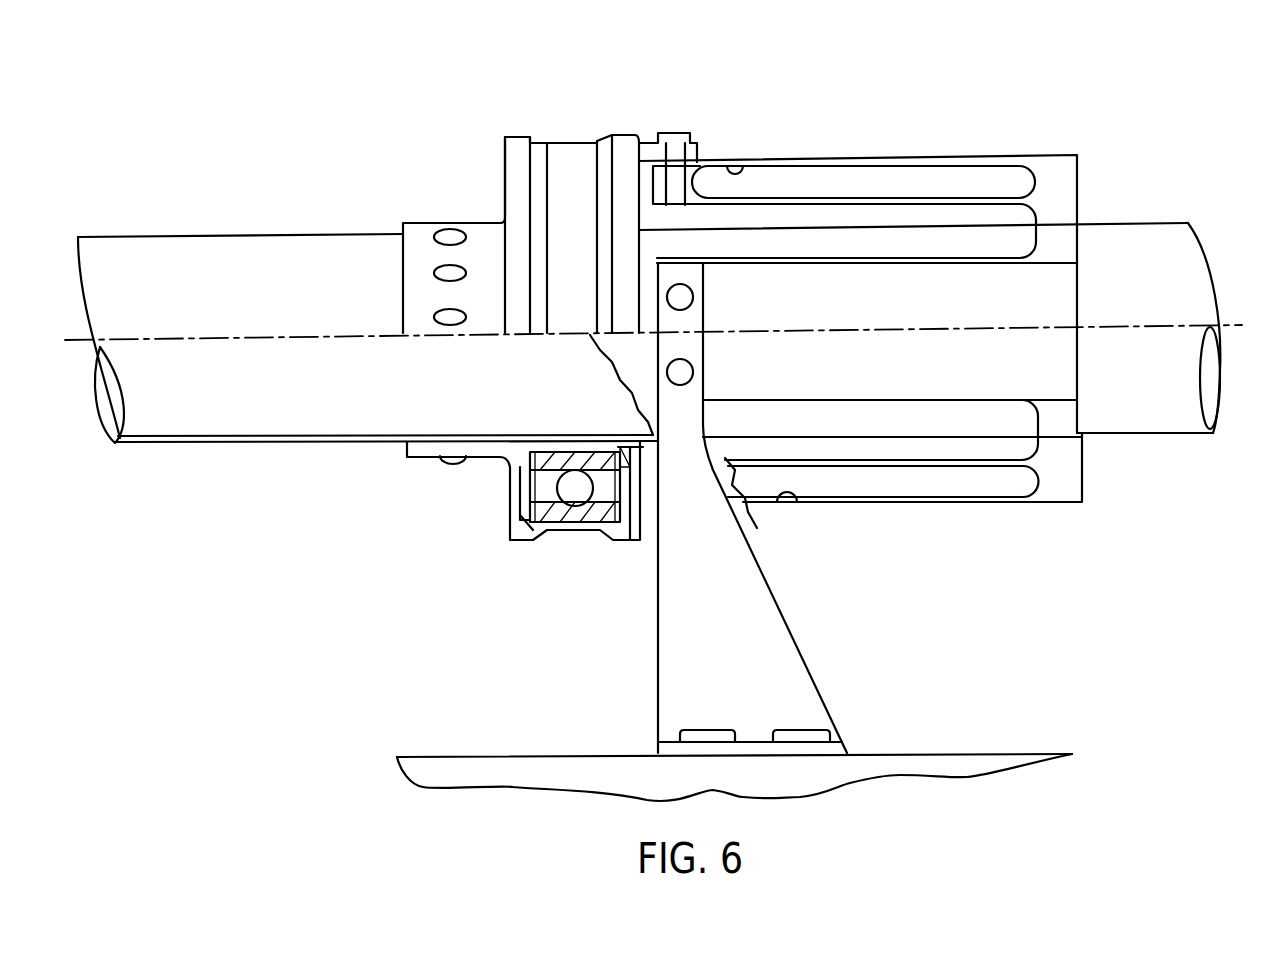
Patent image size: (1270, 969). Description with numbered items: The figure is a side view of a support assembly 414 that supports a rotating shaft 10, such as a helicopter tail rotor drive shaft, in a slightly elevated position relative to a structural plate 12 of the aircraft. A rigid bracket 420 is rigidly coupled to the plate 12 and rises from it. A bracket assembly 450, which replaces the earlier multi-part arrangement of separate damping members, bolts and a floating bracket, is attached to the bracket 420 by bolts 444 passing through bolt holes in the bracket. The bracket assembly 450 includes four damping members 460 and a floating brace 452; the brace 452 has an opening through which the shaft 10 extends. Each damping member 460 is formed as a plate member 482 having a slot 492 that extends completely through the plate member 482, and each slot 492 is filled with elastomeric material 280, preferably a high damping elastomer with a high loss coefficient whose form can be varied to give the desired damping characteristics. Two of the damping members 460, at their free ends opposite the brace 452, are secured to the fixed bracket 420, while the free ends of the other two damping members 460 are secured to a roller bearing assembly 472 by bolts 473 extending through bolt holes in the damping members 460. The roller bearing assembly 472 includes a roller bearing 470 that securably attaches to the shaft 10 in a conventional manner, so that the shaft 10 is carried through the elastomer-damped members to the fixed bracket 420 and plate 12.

The shaft 10 is at (148, 252).
The plate 12 is at (978, 758).
The elastomeric material 280 is at (832, 175).
The support assembly 414 is at (912, 317).
The bracket 420 is at (773, 508).
The bolts 444 is at (684, 372).
The bracket assembly 450 is at (1080, 190).
The floating brace 452 is at (1082, 488).
The damping members 460 is at (789, 156).
The roller bearing 470 is at (571, 539).
The roller bearing assembly 472 is at (633, 125).
The bolts 473 is at (668, 130).
The plate member 482 is at (918, 157).
The slot 492 is at (742, 160).